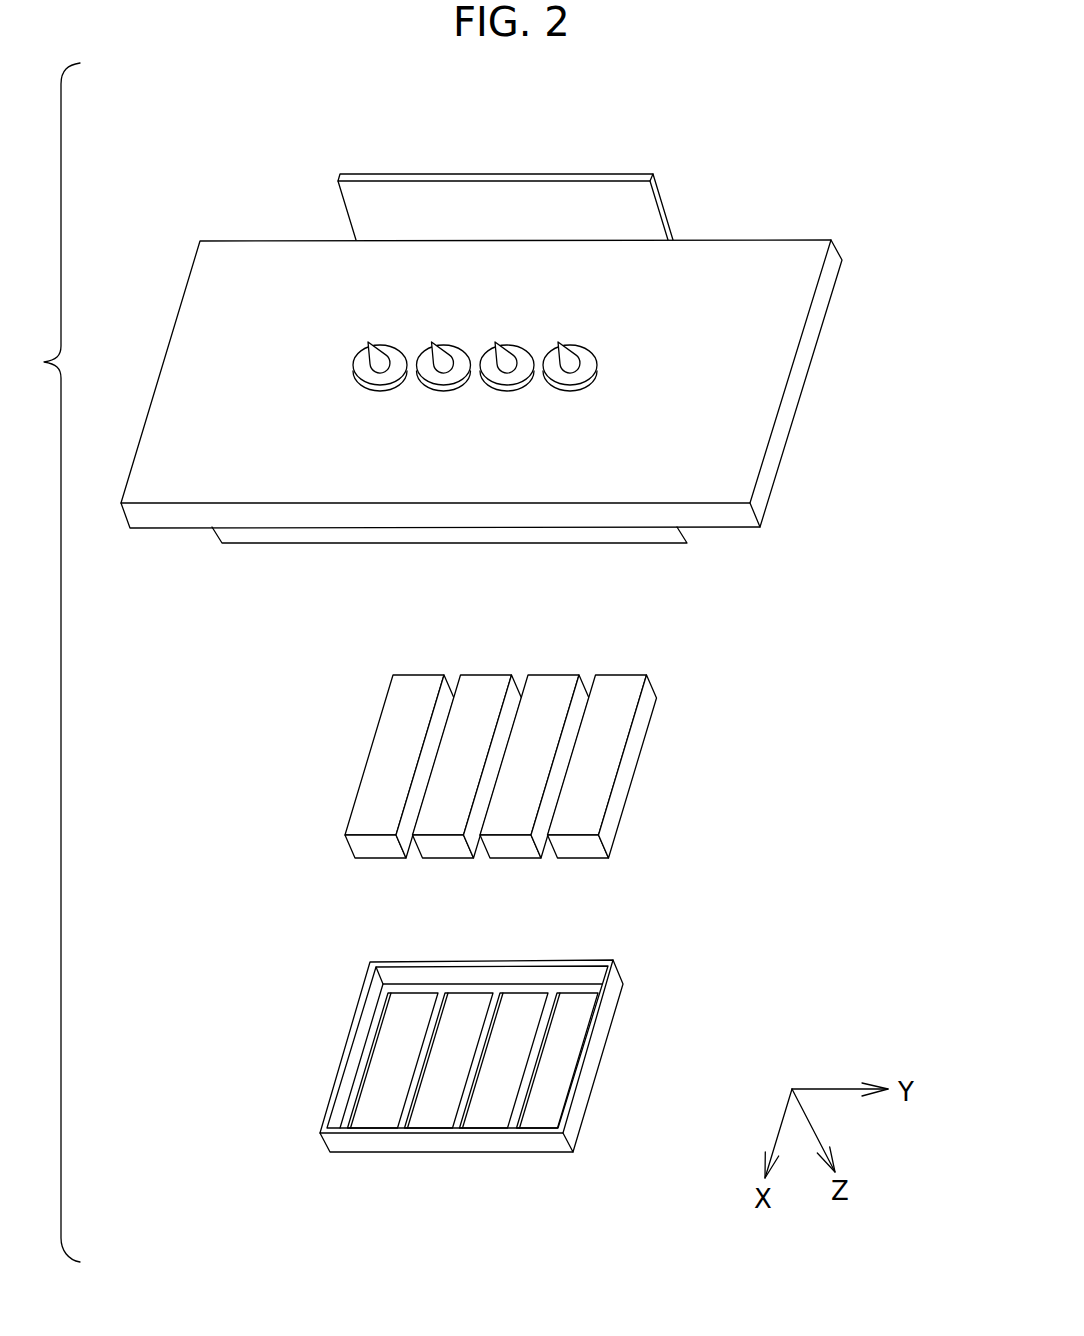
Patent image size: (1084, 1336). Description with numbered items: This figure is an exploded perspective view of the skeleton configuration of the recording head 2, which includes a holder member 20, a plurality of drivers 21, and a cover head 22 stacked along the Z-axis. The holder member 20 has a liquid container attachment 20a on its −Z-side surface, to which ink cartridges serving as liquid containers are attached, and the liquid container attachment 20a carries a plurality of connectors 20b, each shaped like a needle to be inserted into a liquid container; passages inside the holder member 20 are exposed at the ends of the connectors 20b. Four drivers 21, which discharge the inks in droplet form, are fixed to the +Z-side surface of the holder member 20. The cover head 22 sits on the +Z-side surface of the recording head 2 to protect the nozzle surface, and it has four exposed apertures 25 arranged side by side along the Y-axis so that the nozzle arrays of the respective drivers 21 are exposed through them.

The recording head 2 is at (834, 212).
The holder member 20 is at (542, 329).
The liquid container attachment 20a is at (662, 445).
The connector 20b is at (562, 347).
The driver 21 is at (615, 700).
The cover head 22 is at (506, 1098).
The exposed aperture 25 is at (377, 1053).